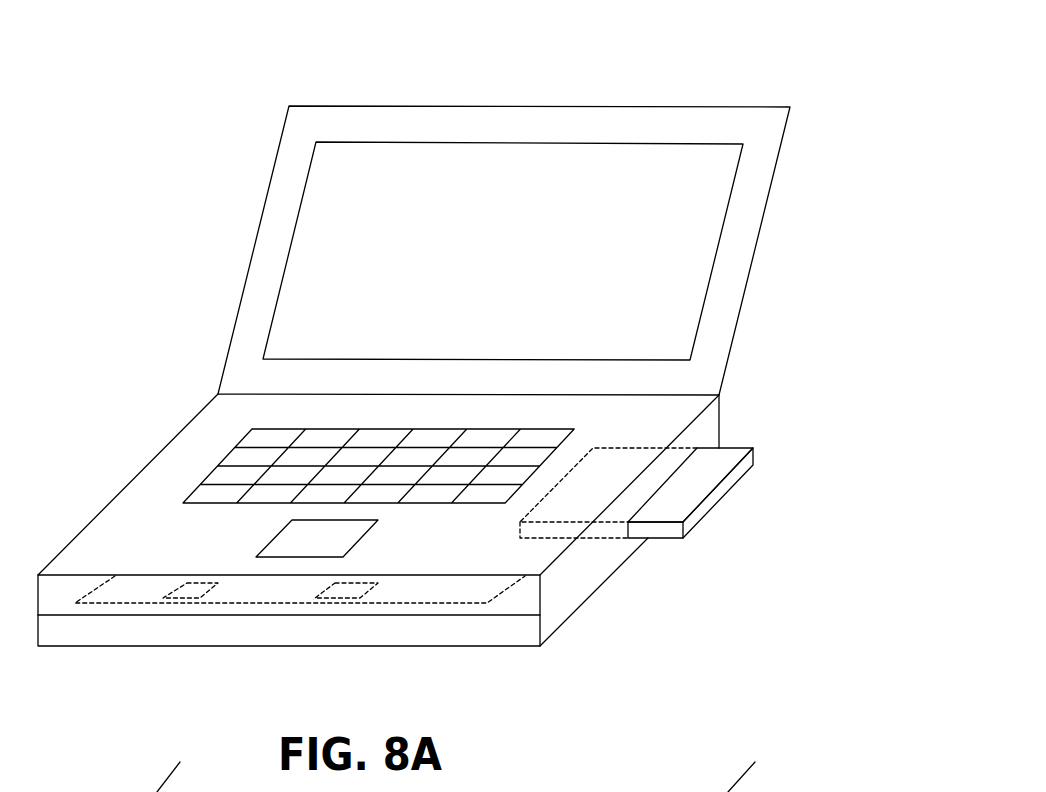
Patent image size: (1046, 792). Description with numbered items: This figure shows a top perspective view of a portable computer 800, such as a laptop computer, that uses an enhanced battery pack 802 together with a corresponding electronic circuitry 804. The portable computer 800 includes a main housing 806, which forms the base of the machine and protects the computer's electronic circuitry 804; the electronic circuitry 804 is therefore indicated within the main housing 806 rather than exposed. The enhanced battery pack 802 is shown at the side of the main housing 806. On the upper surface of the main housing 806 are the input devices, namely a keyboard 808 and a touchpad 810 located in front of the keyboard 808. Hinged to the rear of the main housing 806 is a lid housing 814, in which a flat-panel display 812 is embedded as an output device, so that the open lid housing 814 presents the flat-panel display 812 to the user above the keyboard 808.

The portable computer 800 is at (831, 58).
The enhanced battery pack 802 is at (755, 449).
The electronic circuitry 804 is at (192, 592).
The main housing 806 is at (142, 468).
The keyboard 808 is at (413, 462).
The touchpad 810 is at (272, 538).
The flat-panel display 812 is at (480, 160).
The lid housing 814 is at (766, 202).